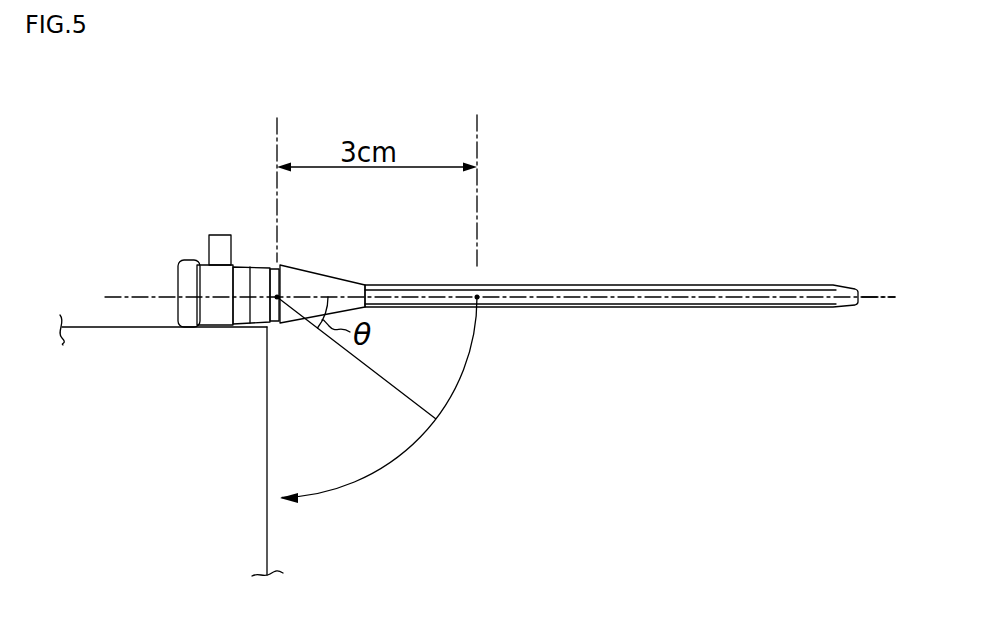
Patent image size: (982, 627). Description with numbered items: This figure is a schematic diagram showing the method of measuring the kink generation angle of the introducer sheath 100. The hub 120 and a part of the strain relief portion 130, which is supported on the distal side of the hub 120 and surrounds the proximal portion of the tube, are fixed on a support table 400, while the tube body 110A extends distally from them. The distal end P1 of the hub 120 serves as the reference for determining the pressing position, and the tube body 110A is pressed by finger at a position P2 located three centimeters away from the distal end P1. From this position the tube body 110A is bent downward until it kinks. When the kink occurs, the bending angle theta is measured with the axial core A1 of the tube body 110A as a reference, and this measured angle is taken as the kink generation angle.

The introducer sheath 100 is at (495, 246).
The tube body 110A is at (677, 288).
The hub 120 is at (203, 279).
The strain relief portion 130 is at (262, 268).
The support table 400 is at (83, 337).
The distal end of the hub P1 is at (276, 299).
The pressing position P2 is at (478, 299).
The axial core of the tube body A1 is at (887, 298).